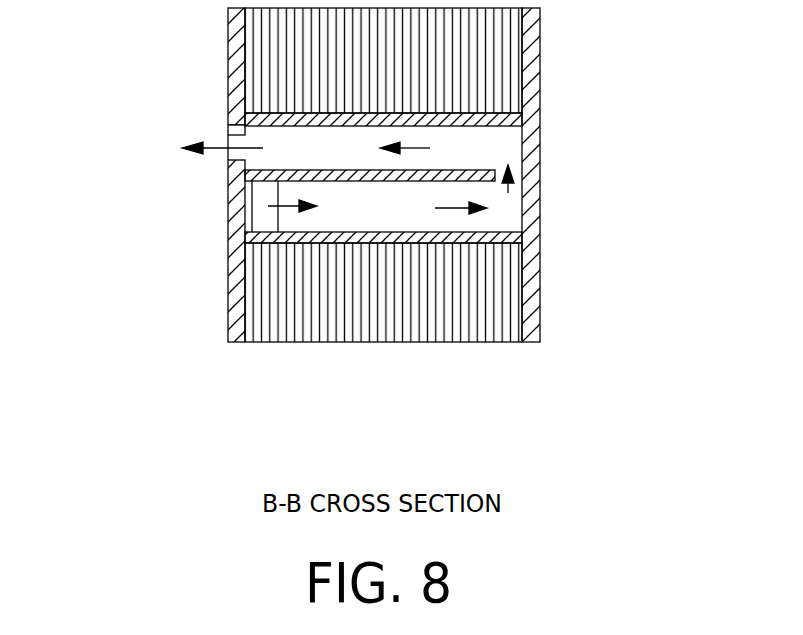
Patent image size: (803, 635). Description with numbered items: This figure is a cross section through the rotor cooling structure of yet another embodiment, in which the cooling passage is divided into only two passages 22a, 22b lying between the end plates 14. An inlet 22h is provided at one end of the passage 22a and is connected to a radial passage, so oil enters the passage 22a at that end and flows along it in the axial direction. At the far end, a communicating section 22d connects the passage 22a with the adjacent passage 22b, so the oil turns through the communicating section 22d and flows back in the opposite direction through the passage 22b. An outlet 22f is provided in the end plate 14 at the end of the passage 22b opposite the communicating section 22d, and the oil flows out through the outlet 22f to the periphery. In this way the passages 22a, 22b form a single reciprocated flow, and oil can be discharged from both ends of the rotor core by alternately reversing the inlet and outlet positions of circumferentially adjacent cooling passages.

The end plate 14 is at (540, 37).
The passage 22a is at (395, 203).
The passage 22b is at (303, 157).
The communicating section 22d is at (518, 189).
The outlet 22f is at (229, 158).
The inlet 22h is at (258, 222).